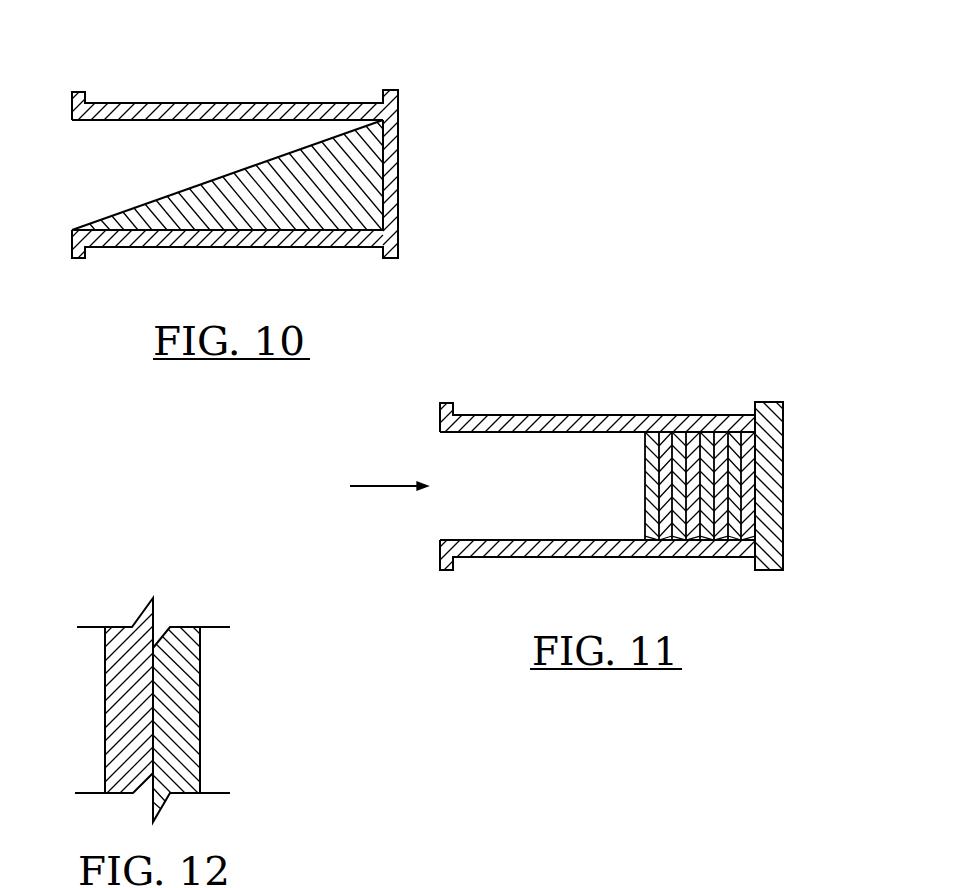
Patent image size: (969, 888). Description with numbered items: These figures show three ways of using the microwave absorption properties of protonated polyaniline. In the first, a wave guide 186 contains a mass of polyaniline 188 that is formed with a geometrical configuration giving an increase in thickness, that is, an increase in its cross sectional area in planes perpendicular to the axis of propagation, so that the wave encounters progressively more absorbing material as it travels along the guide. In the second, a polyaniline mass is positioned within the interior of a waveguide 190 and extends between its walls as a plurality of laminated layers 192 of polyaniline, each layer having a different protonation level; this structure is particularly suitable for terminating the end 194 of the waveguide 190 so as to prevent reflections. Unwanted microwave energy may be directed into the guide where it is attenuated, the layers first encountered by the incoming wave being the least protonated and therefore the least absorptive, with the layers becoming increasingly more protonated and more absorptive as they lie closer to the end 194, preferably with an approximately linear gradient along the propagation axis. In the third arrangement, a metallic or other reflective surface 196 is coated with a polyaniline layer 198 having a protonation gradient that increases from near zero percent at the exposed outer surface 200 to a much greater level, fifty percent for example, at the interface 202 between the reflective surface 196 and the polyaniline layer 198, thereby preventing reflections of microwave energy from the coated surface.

In FIG. 10, the wave guide 186 is at (142, 107).
In FIG. 10, the mass of polyaniline 188 is at (340, 185).
In FIG. 11, the waveguide 190 is at (512, 425).
In FIG. 11, the laminated layers 192 is at (710, 435).
In FIG. 11, the end 194 is at (782, 503).
In FIG. 12, the reflective surface 196 is at (185, 740).
In FIG. 12, the polyaniline layer 198 is at (117, 738).
In FIG. 12, the exposed outer surface 200 is at (105, 680).
In FIG. 12, the interface 202 is at (202, 682).